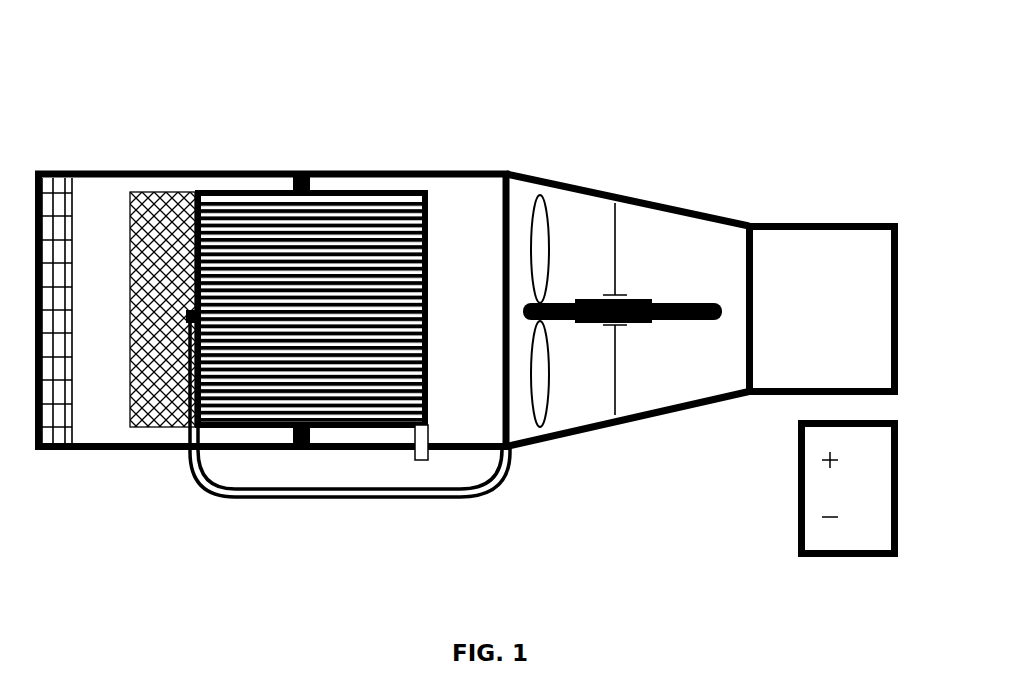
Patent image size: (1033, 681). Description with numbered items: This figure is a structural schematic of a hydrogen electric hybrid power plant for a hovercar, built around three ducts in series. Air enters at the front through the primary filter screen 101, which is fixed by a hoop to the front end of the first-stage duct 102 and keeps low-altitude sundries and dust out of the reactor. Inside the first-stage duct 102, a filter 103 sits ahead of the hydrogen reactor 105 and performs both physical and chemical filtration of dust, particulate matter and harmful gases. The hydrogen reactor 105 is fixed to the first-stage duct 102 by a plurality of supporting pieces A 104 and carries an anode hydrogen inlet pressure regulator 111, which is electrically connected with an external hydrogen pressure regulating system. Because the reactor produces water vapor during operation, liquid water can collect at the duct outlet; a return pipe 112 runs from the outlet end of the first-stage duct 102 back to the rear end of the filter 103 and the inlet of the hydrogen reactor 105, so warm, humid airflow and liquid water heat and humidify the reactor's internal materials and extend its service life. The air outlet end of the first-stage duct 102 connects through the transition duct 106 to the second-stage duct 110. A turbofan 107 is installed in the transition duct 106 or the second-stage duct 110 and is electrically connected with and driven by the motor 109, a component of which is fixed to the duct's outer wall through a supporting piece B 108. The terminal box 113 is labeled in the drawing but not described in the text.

The primary filter screen 101 is at (53, 164).
The first-stage duct 102 is at (120, 167).
The filter 103 is at (201, 186).
The supporting piece A 104 is at (305, 165).
The hydrogen reactor 105 is at (406, 218).
The transition duct 106 is at (549, 172).
The turbofan 107 is at (557, 266).
The supporting piece B 108 is at (623, 262).
The motor 109 is at (656, 292).
The second-stage duct 110 is at (851, 222).
The anode hydrogen inlet pressure regulator 111 is at (424, 459).
The return pipe 112 is at (356, 504).
The terminal box 113 is at (792, 476).